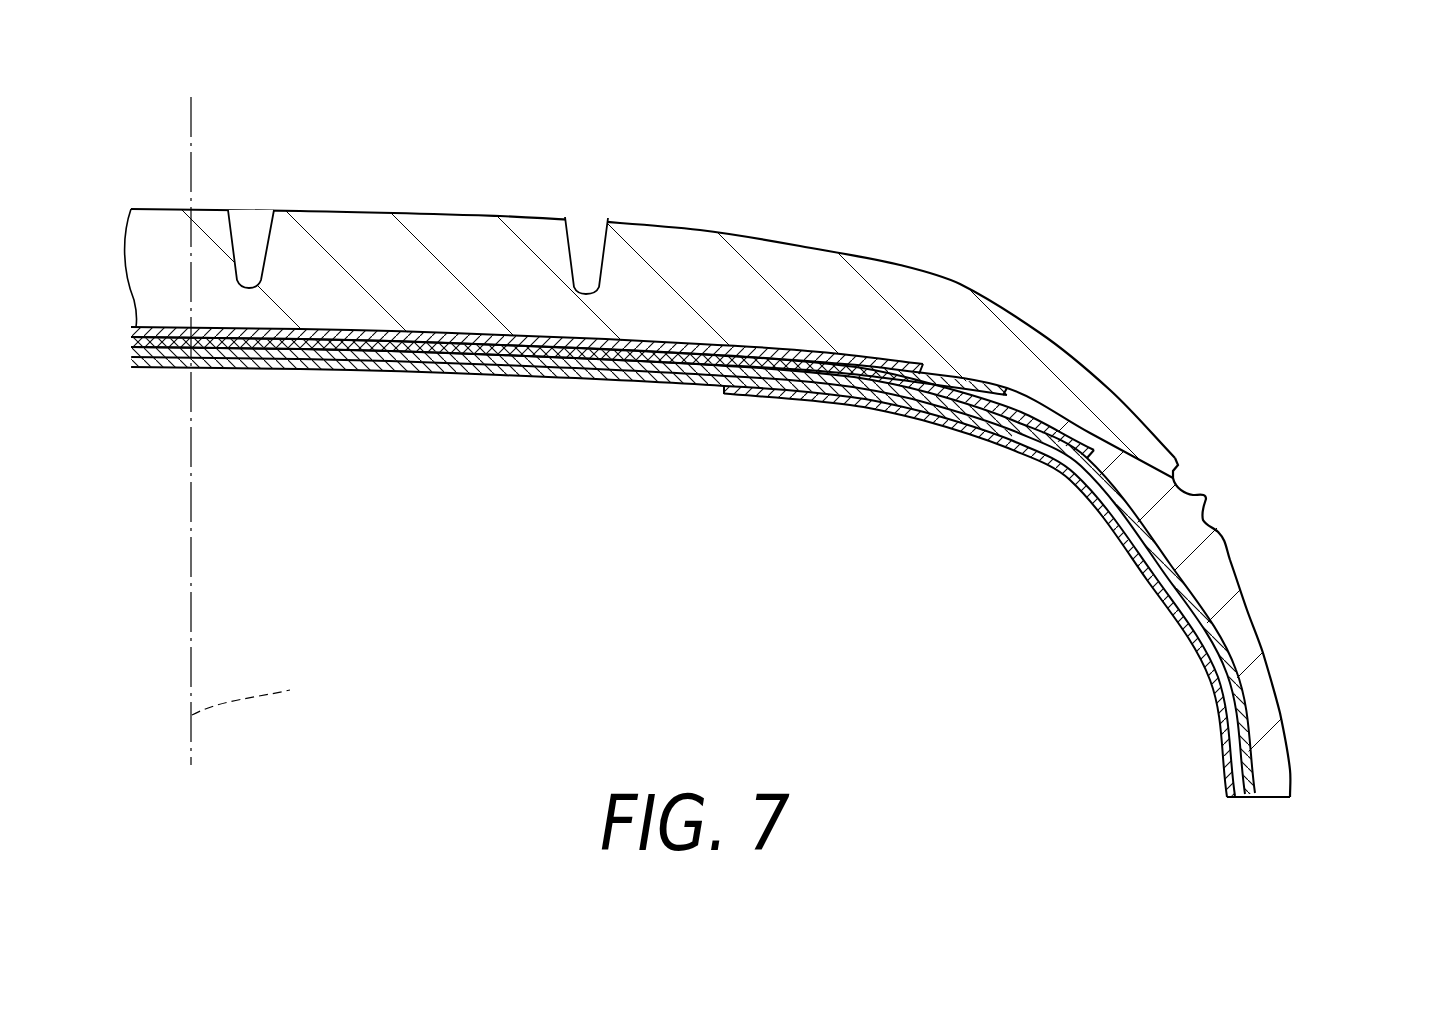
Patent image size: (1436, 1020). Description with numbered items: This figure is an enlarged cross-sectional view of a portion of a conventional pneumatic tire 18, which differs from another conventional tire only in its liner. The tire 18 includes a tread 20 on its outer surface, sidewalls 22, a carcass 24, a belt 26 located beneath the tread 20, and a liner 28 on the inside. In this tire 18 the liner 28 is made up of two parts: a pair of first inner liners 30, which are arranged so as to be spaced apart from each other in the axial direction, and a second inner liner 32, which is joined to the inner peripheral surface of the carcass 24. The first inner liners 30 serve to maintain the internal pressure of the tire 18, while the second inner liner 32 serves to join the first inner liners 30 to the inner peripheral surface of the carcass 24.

The tire 18 is at (1207, 83).
The tread 20 is at (1075, 176).
The sidewalls 22 is at (1319, 729).
The carcass 24 is at (1239, 630).
The belt 26 is at (739, 331).
The liner 28 is at (990, 522).
The first inner liners 30 is at (1085, 484).
The second inner liner 32 is at (1163, 542).